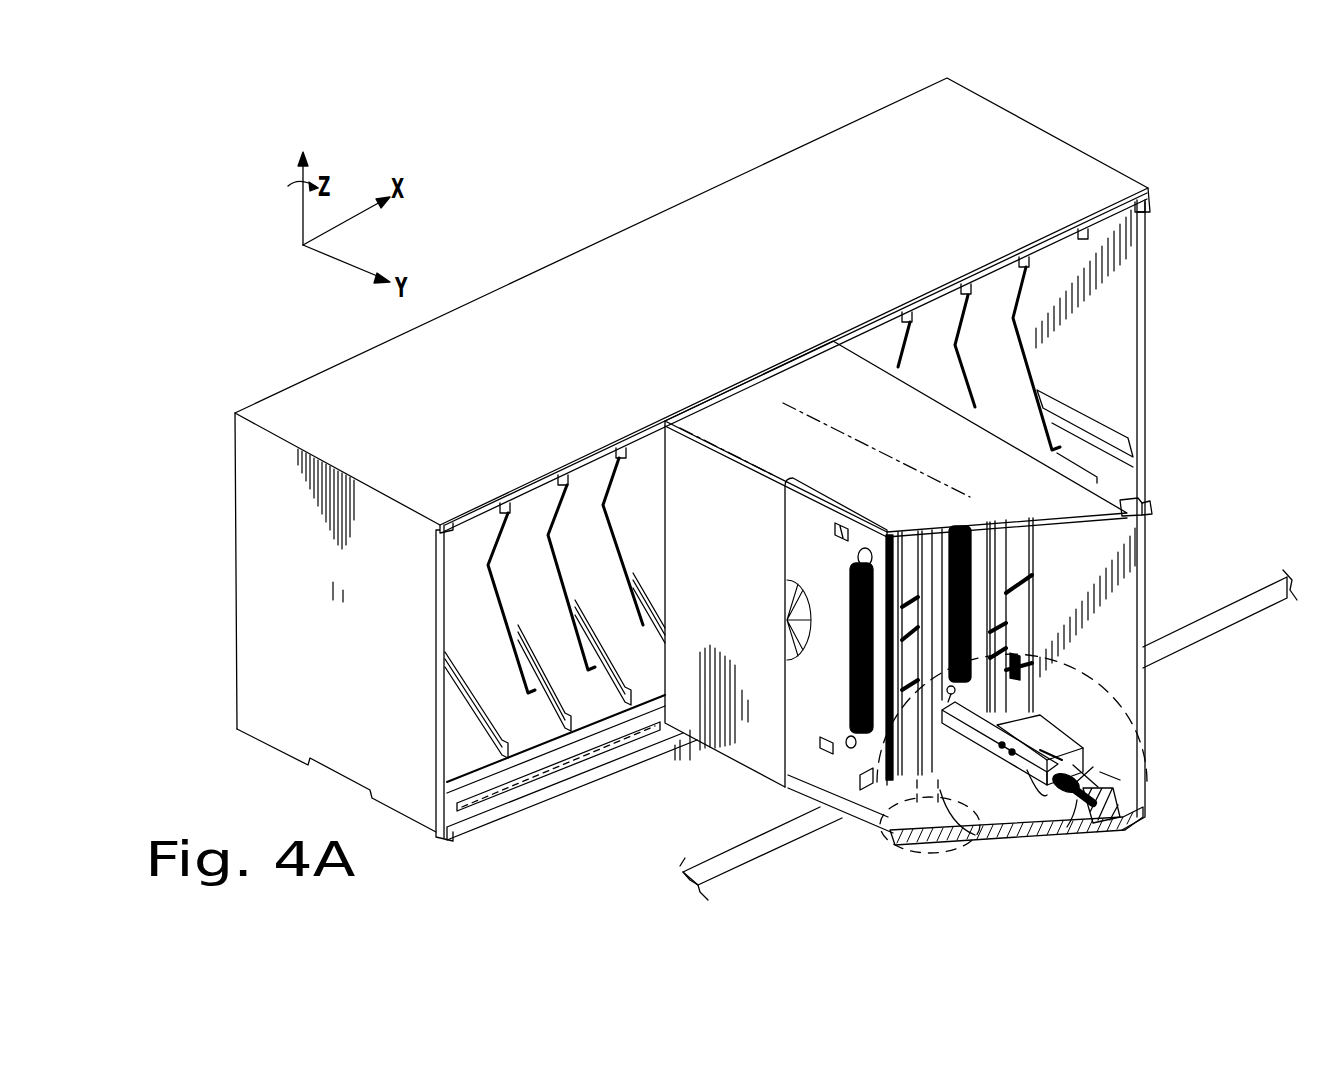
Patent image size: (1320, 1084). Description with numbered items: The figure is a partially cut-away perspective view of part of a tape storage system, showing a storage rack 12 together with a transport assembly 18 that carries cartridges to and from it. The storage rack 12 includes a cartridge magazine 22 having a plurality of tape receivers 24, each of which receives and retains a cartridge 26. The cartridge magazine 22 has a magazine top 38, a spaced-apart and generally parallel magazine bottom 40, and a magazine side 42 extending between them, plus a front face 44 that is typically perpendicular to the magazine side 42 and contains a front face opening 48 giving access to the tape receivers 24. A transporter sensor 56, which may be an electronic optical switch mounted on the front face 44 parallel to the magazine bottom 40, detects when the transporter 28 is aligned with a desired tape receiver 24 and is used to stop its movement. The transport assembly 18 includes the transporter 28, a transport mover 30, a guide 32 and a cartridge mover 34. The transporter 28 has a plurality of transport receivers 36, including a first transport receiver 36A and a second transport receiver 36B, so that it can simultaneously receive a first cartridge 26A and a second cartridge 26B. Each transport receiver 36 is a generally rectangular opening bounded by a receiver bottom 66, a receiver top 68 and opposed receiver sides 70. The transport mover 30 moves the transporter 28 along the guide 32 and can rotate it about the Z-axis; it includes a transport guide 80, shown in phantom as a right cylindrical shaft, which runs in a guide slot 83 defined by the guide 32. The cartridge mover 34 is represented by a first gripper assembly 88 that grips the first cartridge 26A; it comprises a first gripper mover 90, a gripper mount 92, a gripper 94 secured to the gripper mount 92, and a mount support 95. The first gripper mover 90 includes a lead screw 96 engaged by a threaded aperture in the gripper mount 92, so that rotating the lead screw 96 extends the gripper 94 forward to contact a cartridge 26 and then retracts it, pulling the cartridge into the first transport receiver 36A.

The storage rack 12 is at (681, 481).
The cartridge magazine 22 is at (666, 254).
The transport assembly 18 is at (1153, 511).
The tape receiver 24 is at (471, 550).
The cartridge 26 is at (1023, 608).
The first cartridge 26A is at (1037, 585).
The second cartridge 26B is at (873, 762).
The transporter 28 is at (759, 369).
The transport mover 30 is at (960, 853).
The guide 32 is at (707, 860).
The cartridge mover 34 is at (1102, 724).
The transport receiver 36 is at (1007, 678).
The first transport receiver 36A is at (1066, 552).
The second transport receiver 36B is at (800, 759).
The magazine top 38 is at (343, 386).
The magazine bottom 40 is at (283, 758).
The magazine side 42 is at (262, 557).
The front face 44 is at (448, 814).
The front face opening 48 is at (1098, 322).
The transporter sensor 56 is at (572, 756).
The receiver bottom 66 is at (1010, 835).
The receiver top 68 is at (813, 360).
The receiver side 70 is at (680, 727).
The transport guide 80 is at (1007, 795).
The guide slot 83 is at (737, 855).
The first gripper assembly 88 is at (1043, 733).
The first gripper mover 90 is at (1095, 757).
The gripper mount 92 is at (1032, 800).
The gripper 94 is at (993, 732).
The mount support 95 is at (1122, 786).
The lead screw 96 is at (1068, 808).